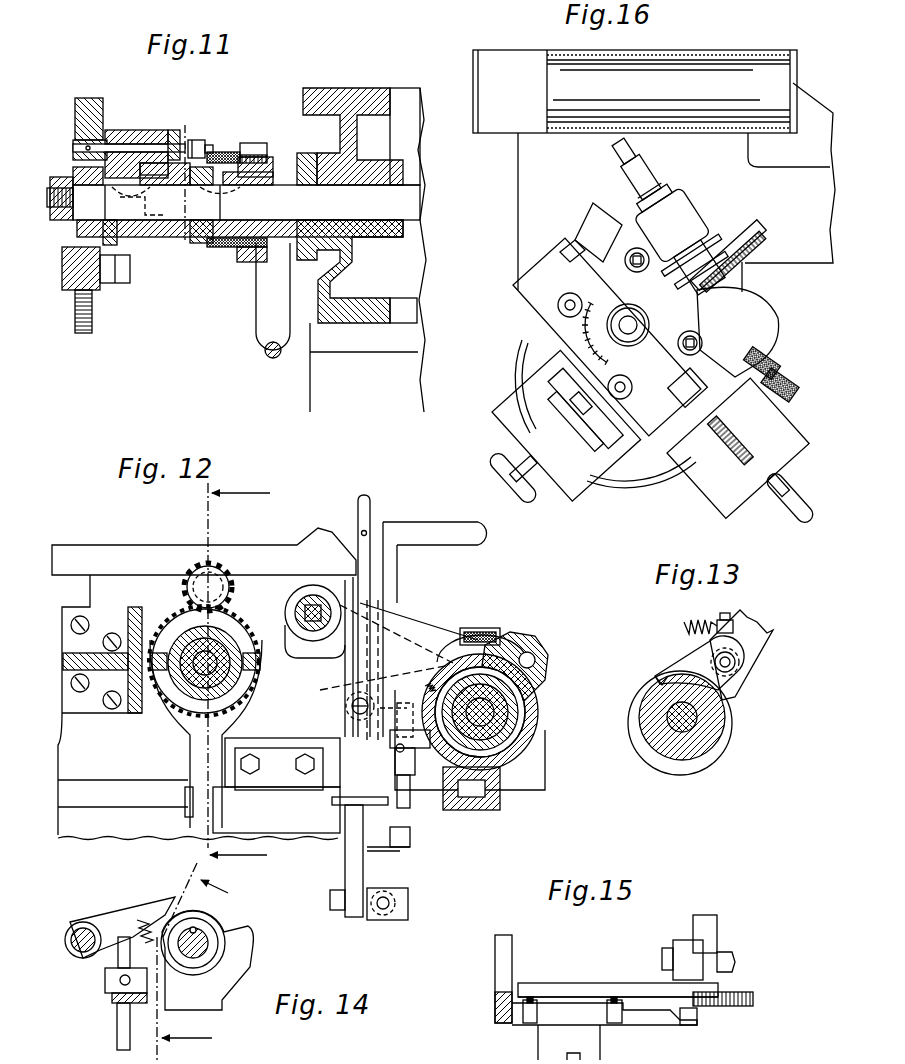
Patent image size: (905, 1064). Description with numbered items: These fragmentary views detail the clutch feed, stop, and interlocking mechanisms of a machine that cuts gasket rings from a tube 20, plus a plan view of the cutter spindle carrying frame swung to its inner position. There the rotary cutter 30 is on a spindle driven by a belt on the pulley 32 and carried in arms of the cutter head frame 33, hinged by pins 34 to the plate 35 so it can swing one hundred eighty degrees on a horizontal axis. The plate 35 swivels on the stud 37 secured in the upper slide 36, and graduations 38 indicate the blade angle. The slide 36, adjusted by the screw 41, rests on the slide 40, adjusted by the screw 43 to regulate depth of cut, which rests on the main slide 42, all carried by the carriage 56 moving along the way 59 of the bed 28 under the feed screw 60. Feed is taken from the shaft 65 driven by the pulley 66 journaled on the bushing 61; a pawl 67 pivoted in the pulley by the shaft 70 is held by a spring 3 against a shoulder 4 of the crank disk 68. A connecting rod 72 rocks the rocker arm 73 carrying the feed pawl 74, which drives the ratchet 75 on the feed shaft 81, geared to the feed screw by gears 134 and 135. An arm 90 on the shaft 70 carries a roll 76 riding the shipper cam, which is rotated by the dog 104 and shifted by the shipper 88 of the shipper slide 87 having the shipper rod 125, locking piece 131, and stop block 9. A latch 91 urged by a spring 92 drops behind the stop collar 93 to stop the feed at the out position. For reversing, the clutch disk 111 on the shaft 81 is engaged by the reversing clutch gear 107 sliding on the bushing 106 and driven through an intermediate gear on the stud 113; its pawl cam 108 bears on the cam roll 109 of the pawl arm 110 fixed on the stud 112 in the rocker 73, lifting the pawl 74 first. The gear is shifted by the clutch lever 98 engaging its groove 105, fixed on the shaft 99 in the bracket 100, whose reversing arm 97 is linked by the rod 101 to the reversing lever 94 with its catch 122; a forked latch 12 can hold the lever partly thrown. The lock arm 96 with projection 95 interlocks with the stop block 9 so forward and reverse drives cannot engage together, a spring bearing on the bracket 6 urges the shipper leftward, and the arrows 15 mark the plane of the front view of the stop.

In FIG. 13, the spring 3 is at (684, 626).
In FIG. 13, the shoulder 4 is at (658, 677).
In FIG. 12, the bracket 6 is at (225, 677).
In FIG. 12, the stop block 9 is at (410, 812).
In FIG. 12, the latch 12 is at (269, 613).
In FIG. 14, the section line 15 is at (198, 963).
In FIG. 16, the tube 20 is at (635, 91).
In FIG. 11, the bed 28 is at (340, 312).
In FIG. 12, the bed 28 is at (198, 707).
In FIG. 16, the rotary cutter 30 is at (614, 146).
In FIG. 16, the pulley 32 is at (746, 275).
In FIG. 16, the cutter head frame 33 is at (752, 313).
In FIG. 16, the pins 34 is at (575, 240).
In FIG. 16, the plate 35 is at (567, 283).
In FIG. 16, the upper slide 36 is at (695, 387).
In FIG. 16, the stud 37 is at (618, 325).
In FIG. 16, the graduations 38 is at (572, 340).
In FIG. 16, the slide 40 is at (700, 482).
In FIG. 16, the screw 41 is at (735, 426).
In FIG. 16, the main slide 42 is at (566, 462).
In FIG. 16, the screw 43 is at (495, 460).
In FIG. 16, the carriage 56 is at (676, 187).
In FIG. 12, the way 59 is at (320, 527).
In FIG. 12, the feed screw 60 is at (192, 582).
In FIG. 12, the bushing 61 is at (540, 705).
In FIG. 12, the shaft 65 is at (520, 722).
In FIG. 14, the shaft 65 is at (203, 936).
In FIG. 13, the pulley 66 is at (768, 641).
In FIG. 13, the pawl 67 is at (690, 665).
In FIG. 13, the crank disk 68 is at (655, 733).
In FIG. 12, the shaft 70 is at (530, 660).
In FIG. 13, the shaft 70 is at (738, 668).
In FIG. 11, the connecting rod 72 is at (93, 326).
In FIG. 11, the rocker arm 73 is at (116, 242).
In FIG. 11, the feed pawl 74 is at (92, 98).
In FIG. 11, the ratchet 75 is at (76, 165).
In FIG. 12, the roll 76 is at (470, 630).
In FIG. 11, the feed shaft 81 is at (233, 182).
In FIG. 12, the feed shaft 81 is at (220, 648).
In FIG. 12, the shipper slide 87 is at (420, 752).
In FIG. 14, the shipper slide 87 is at (105, 978).
In FIG. 15, the shipper slide 87 is at (575, 988).
In FIG. 12, the shipper 88 is at (502, 758).
In FIG. 14, the shipper 88 is at (242, 970).
In FIG. 15, the shipper 88 is at (500, 975).
In FIG. 12, the arm 90 is at (482, 650).
In FIG. 12, the latch 91 is at (388, 685).
In FIG. 14, the latch 91 is at (110, 918).
In FIG. 15, the latch 91 is at (705, 935).
In FIG. 12, the spring 92 is at (414, 692).
In FIG. 14, the spring 92 is at (148, 924).
In FIG. 12, the stop collar 93 is at (508, 745).
In FIG. 14, the stop collar 93 is at (226, 948).
In FIG. 12, the reversing lever 94 is at (374, 586).
In FIG. 12, the locking projection 95 is at (402, 842).
In FIG. 12, the lock arm 96 is at (362, 874).
In FIG. 12, the reversing arm 97 is at (385, 845).
In FIG. 11, the clutch lever 98 is at (273, 296).
In FIG. 12, the clutch lever 98 is at (190, 728).
In FIG. 11, the shaft 99 is at (267, 360).
In FIG. 12, the shaft 99 is at (186, 810).
In FIG. 12, the bracket 100 is at (276, 785).
In FIG. 12, the rod 101 is at (380, 910).
In FIG. 12, the driving dog 104 is at (500, 775).
In FIG. 11, the groove 105 is at (282, 168).
In FIG. 11, the bushing 106 is at (232, 250).
In FIG. 11, the reversing clutch gear 107 is at (298, 165).
In FIG. 11, the pawl cam 108 is at (214, 152).
In FIG. 11, the cam roll 109 is at (200, 140).
In FIG. 11, the pawl arm 110 is at (178, 130).
In FIG. 11, the clutch disk 111 is at (200, 245).
In FIG. 11, the stud 112 is at (135, 144).
In FIG. 12, the stud 113 is at (313, 605).
In FIG. 12, the catch 122 is at (350, 693).
In FIG. 14, the shipper rod 125 is at (118, 988).
In FIG. 15, the shipper rod 125 is at (740, 993).
In FIG. 15, the locking piece 131 is at (700, 1015).
In FIG. 12, the gear 134 is at (262, 692).
In FIG. 12, the gear 135 is at (223, 572).